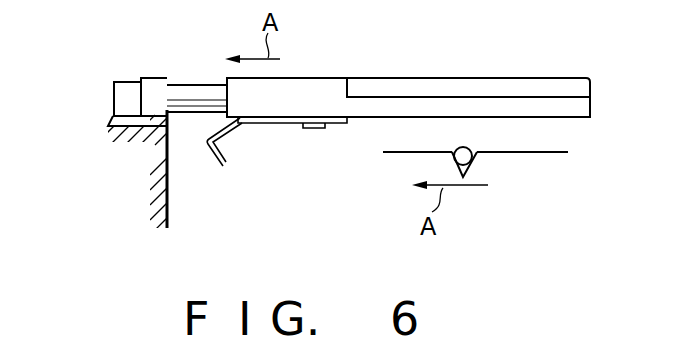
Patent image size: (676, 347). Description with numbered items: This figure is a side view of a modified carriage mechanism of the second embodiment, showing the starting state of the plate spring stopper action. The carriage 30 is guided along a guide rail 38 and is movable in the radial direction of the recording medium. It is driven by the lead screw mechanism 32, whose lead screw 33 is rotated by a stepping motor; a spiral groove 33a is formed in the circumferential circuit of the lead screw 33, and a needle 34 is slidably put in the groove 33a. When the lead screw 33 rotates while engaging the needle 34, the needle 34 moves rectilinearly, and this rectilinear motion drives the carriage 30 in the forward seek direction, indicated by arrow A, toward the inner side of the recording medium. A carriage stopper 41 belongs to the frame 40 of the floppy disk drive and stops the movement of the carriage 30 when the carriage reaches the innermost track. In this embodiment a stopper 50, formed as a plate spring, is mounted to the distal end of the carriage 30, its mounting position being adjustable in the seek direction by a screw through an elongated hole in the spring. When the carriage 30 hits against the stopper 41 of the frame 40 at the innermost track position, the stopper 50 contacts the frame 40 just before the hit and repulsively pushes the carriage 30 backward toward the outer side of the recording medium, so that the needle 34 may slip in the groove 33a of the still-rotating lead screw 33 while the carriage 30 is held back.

The carriage 30 is at (317, 93).
The lead screw mechanism 32 is at (467, 192).
The lead screw 33 is at (505, 158).
The spiral groove 33a is at (457, 160).
The needle 34 is at (472, 149).
The guide rail 38 is at (200, 90).
The frame 40 is at (133, 155).
The carriage stopper 41 is at (155, 86).
The stopper 50 is at (225, 166).